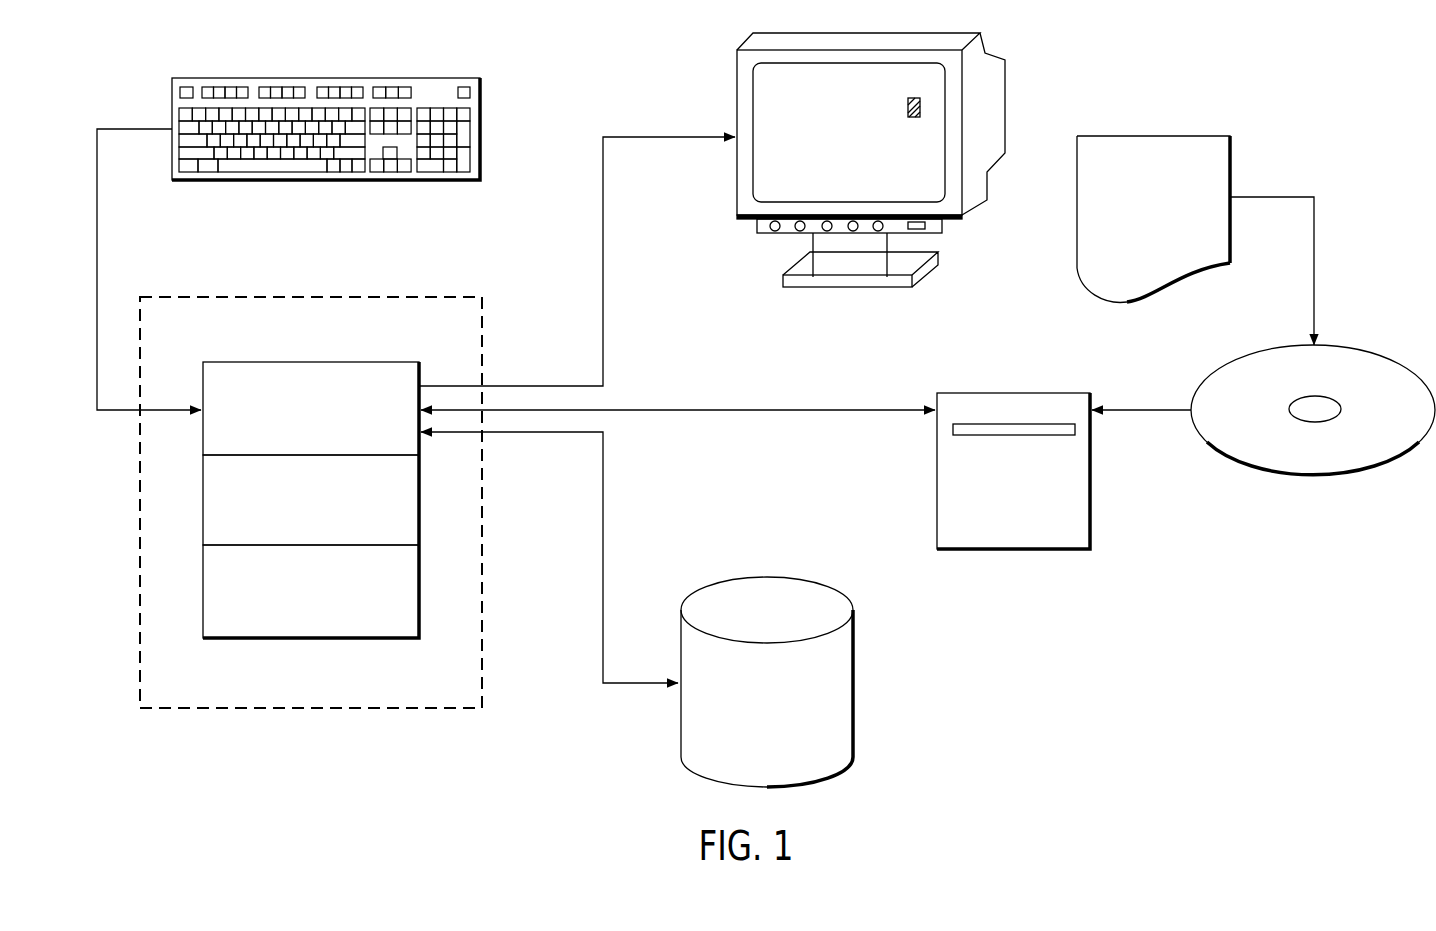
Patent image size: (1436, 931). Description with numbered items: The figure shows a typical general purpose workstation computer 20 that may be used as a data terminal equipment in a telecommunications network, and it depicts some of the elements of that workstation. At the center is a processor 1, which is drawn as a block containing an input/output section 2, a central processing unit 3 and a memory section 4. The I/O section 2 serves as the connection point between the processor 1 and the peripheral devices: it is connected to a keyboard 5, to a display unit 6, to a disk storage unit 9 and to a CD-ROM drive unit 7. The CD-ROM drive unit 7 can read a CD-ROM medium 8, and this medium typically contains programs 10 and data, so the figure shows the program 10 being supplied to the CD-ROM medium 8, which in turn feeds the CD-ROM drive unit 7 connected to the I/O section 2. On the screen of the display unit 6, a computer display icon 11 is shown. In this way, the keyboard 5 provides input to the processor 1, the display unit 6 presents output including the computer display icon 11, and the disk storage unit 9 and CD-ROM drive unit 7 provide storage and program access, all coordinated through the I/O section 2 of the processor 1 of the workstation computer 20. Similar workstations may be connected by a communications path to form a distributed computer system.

The processor 1 is at (375, 339).
The input/output section 2 is at (402, 360).
The central processing unit 3 is at (419, 504).
The memory section 4 is at (419, 588).
The keyboard 5 is at (400, 76).
The display unit 6 is at (735, 60).
The CD-ROM drive unit 7 is at (1045, 393).
The CD-ROM medium 8 is at (1378, 358).
The disk storage unit 9 is at (855, 648).
The program 10 is at (1170, 136).
The computer display icon 11 is at (913, 121).
The general purpose workstation computer 20 is at (1312, 72).